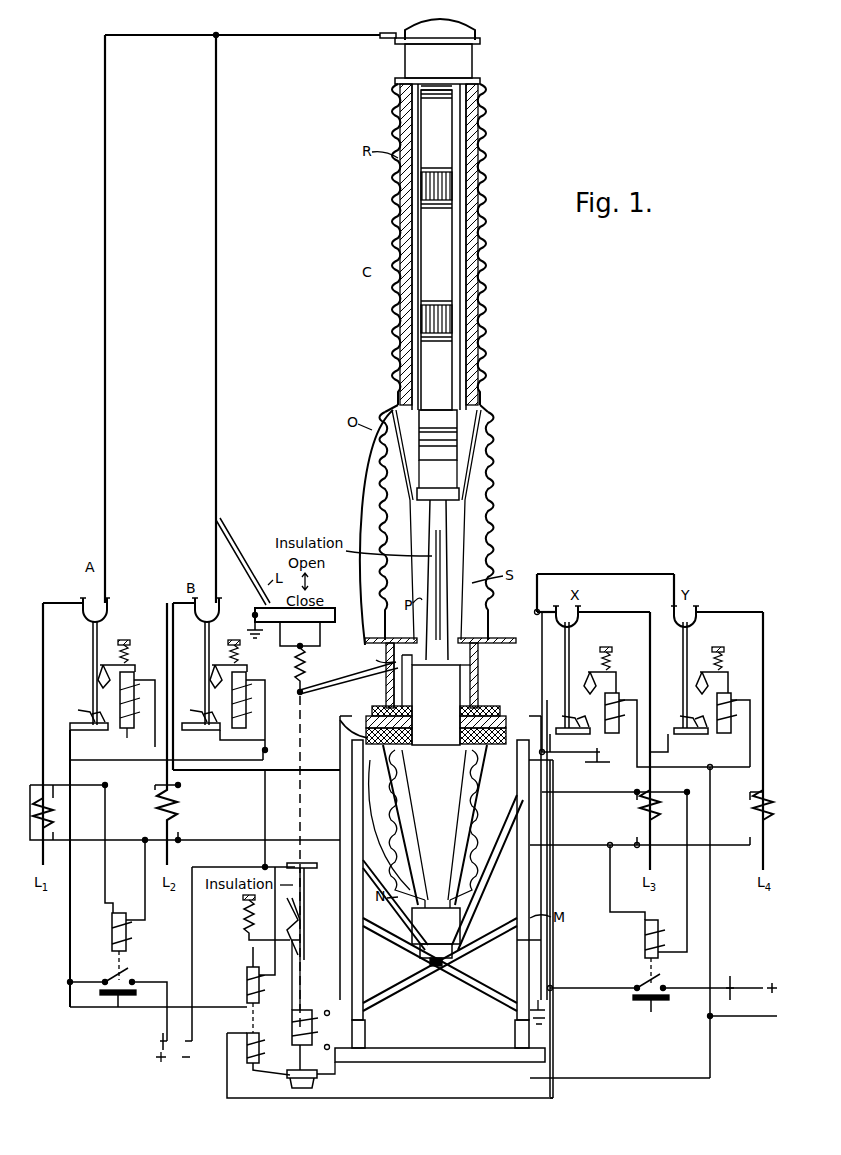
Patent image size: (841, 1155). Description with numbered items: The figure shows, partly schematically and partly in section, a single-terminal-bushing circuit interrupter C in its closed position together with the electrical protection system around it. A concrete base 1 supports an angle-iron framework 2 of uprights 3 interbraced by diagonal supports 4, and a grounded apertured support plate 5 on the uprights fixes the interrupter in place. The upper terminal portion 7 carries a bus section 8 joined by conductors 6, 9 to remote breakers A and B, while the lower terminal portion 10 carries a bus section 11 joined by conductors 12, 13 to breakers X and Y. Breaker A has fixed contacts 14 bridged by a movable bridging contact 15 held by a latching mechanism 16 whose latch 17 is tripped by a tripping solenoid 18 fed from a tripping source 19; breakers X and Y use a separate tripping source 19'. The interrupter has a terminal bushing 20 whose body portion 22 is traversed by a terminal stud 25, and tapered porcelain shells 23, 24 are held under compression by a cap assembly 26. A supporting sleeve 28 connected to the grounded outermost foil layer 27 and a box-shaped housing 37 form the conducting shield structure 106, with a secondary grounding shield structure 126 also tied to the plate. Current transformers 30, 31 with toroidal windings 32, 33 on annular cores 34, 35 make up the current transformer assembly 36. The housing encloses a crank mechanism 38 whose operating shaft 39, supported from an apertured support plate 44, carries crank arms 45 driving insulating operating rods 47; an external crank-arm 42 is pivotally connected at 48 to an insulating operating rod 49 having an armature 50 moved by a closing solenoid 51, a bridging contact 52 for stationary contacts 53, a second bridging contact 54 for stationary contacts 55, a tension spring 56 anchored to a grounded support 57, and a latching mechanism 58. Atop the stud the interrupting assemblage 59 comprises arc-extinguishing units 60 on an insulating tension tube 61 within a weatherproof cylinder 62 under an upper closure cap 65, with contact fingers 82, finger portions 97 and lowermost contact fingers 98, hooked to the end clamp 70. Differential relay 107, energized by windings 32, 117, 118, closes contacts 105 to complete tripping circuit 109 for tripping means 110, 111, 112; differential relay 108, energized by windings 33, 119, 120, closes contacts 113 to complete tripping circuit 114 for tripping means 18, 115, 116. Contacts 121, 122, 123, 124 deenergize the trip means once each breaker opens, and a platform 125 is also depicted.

The base 1 is at (448, 1050).
The angle-iron framework 2 is at (345, 913).
The angle-iron uprights 3 is at (530, 880).
The diagonally extending angle-iron supports 4 is at (484, 862).
The apertured grounded support plate 5 is at (487, 740).
The conductor 6 is at (218, 413).
The upper terminal portion 7 is at (386, 34).
The bus section 8 is at (318, 34).
The conductor 9 is at (106, 413).
The lower terminal portion 10 is at (440, 970).
The bus section 11 is at (543, 943).
The electrical conductor 12 is at (540, 610).
The electrical conductor 13 is at (598, 573).
The fixed contacts 14 is at (92, 600).
The movable bridging contact 15 is at (86, 618).
The latching mechanism 16 is at (139, 630).
The latch 17 is at (132, 664).
The tripping solenoid 18 is at (128, 738).
The tripping source 19 is at (163, 964).
The tripping source 19' is at (743, 990).
The single terminal bushing 20 is at (438, 699).
The body portion 22 is at (448, 520).
The porcelain shell 23 is at (465, 885).
The porcelain shell 24 is at (492, 538).
The terminal stud 25 is at (436, 490).
The cap assembly 26 is at (460, 920).
The outermost condenser foil layer 27 is at (430, 745).
The supporting sleeve 28 is at (410, 700).
The current transformer 30 is at (374, 697).
The current transformer 31 is at (408, 730).
The toroidal winding 32 is at (462, 712).
The toroidal winding 33 is at (462, 735).
The annular core 34 is at (474, 704).
The annular core 35 is at (362, 760).
The current transformer assembly 36 is at (492, 706).
The box-shaped housing 37 is at (487, 660).
The crank mechanism 38 is at (439, 645).
The operating shaft 39 is at (378, 659).
The crank-arm 42 is at (349, 680).
The apertured support plate 44 is at (470, 644).
The crank arms 45 is at (430, 655).
The insulating operating rods 47 is at (433, 636).
The pivotal connection 48 is at (300, 690).
The insulating operating rod 49 is at (306, 943).
The armature 50 is at (312, 1028).
The closing solenoid 51 is at (324, 1011).
The bridging contact 52 is at (292, 1068).
The stationary contacts 53 is at (311, 1080).
The second bridging contact 54 is at (304, 866).
The second pair of stationary contacts 55 is at (306, 878).
The tension spring 56 is at (306, 664).
The grounded support 57 is at (283, 648).
The latching mechanism 58 is at (261, 925).
The interrupting assemblage 59 is at (443, 269).
The arc-extinguishing units 60 is at (443, 118).
The insulating tension tube 61 is at (468, 400).
The weatherproof cylinder 62 is at (483, 374).
The upper closure cap 65 is at (473, 60).
The terminal-bushing end clamp 70 is at (518, 461).
The contact fingers 82 is at (434, 174).
The finger portions 97 is at (432, 88).
The lowermost contact fingers 98 is at (436, 440).
The contacts 105 is at (636, 980).
The conducting shield structure 106 is at (486, 680).
The differential relay 107 is at (651, 1012).
The differential relay 108 is at (119, 1000).
The tripping circuit 109 is at (550, 1052).
The tripping means 110 is at (605, 753).
The tripping means 111 is at (712, 753).
The tripping means 112 is at (229, 1029).
The contacts 113 is at (104, 978).
The tripping circuit 114 is at (236, 1008).
The tripping means 115 is at (239, 730).
The tripping means 116 is at (232, 972).
The current transformer secondary winding 117 is at (636, 826).
The current transformer secondary winding 118 is at (756, 822).
The current transformer secondary winding 119 is at (40, 818).
The current transformer secondary winding 120 is at (178, 814).
The contacts 121 is at (80, 709).
The contacts 122 is at (196, 707).
The contacts 123 is at (566, 720).
The contacts 124 is at (676, 720).
The platform 125 is at (253, 626).
The secondary grounding shield structure 126 is at (340, 720).